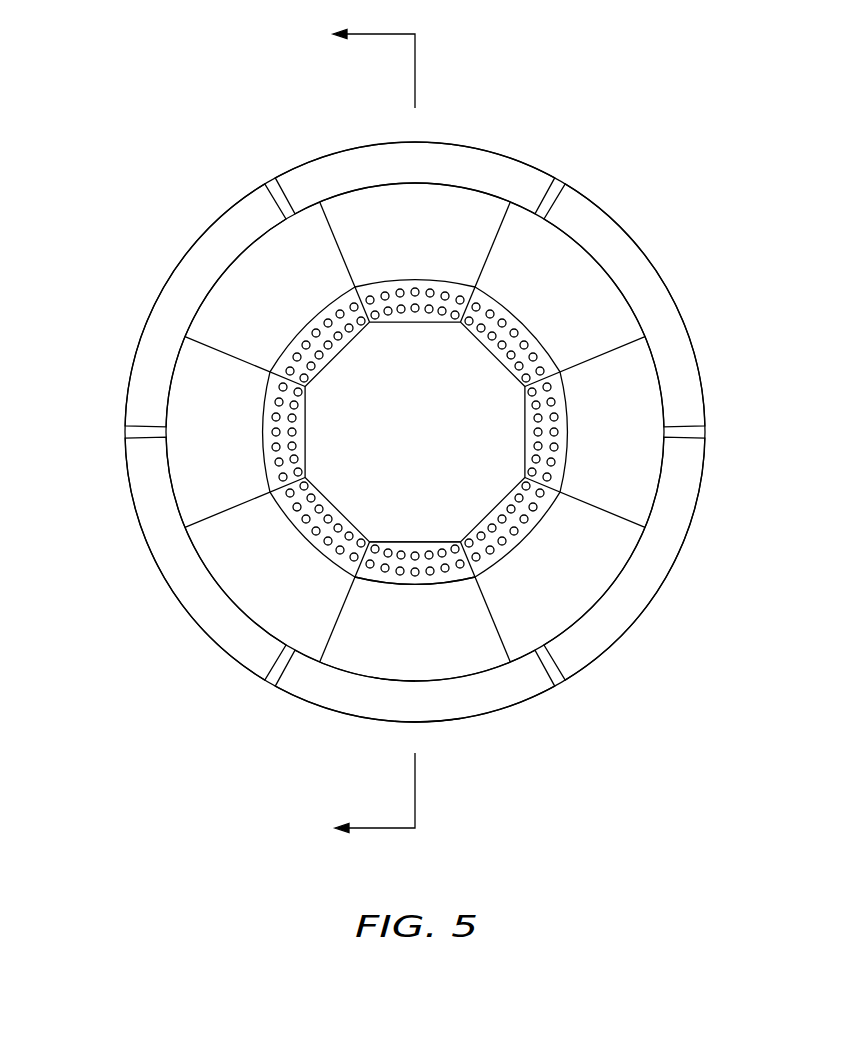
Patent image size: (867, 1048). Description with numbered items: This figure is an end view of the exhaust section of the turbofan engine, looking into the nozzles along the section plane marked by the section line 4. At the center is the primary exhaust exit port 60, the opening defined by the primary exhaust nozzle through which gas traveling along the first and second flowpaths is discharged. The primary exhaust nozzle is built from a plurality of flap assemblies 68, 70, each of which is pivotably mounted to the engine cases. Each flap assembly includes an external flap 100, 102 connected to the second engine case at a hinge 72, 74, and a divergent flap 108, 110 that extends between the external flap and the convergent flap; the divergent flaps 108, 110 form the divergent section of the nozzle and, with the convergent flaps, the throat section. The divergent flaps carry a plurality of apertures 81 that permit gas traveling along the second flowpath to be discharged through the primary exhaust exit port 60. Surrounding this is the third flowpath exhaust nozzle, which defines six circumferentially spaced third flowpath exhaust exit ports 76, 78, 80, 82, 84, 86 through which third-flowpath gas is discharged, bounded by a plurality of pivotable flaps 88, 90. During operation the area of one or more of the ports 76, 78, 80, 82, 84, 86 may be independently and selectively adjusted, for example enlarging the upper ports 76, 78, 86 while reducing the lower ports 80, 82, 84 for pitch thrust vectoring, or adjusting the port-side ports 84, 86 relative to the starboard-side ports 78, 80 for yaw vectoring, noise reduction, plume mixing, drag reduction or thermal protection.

The section line 4- 4 is at (365, 432).
The primary exhaust exit port 60 is at (381, 436).
The flap assembly 68 is at (375, 222).
The flap assembly 70 is at (377, 653).
The hinge 72 is at (377, 183).
The hinge 74 is at (390, 683).
The third flowpath exhaust exit port 76 is at (455, 165).
The third flowpath exhaust exit port 78 is at (645, 285).
The third flowpath exhaust exit port 80 is at (652, 562).
The apertures 81 is at (383, 297).
The third flowpath exhaust exit port 82 is at (517, 683).
The third flowpath exhaust exit port 84 is at (163, 550).
The third flowpath exhaust exit port 86 is at (165, 313).
The flap 88 is at (387, 142).
The flap 90 is at (443, 722).
The external flap 100 is at (467, 222).
The external flap 102 is at (462, 655).
The divergent flap 108 is at (480, 294).
The divergent flap 110 is at (373, 563).